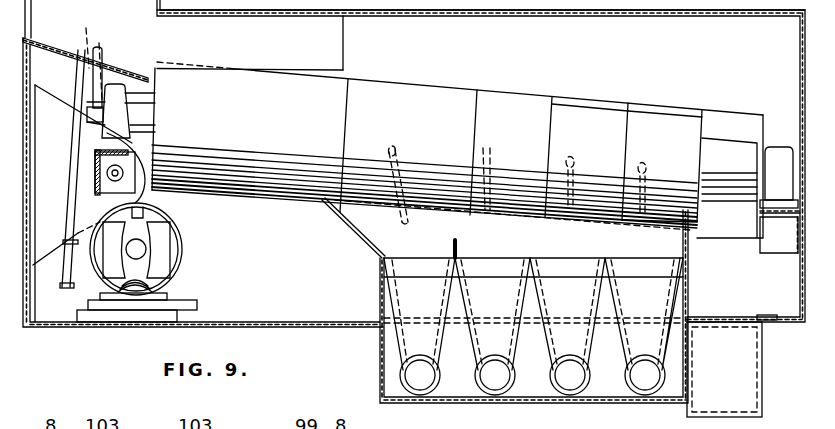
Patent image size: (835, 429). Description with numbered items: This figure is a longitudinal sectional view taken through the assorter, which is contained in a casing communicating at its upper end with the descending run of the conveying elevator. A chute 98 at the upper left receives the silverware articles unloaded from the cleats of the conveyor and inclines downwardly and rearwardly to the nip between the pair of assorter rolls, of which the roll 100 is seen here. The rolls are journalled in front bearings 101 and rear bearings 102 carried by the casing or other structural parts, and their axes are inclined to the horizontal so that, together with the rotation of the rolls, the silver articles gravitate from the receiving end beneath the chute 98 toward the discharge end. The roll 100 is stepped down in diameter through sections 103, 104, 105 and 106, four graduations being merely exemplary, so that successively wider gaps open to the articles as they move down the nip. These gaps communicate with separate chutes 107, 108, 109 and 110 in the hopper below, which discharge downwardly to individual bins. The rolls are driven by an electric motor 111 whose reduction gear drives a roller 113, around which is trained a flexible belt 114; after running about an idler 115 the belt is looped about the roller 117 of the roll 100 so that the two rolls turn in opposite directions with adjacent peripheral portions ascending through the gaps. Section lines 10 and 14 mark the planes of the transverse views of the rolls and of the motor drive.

The section line 10- 10 is at (418, 247).
The section line 14- 14 is at (70, 68).
The chute 98 is at (119, 63).
The assorter roll 100 is at (275, 122).
The front bearing 101 is at (117, 95).
The rear bearing 102 is at (778, 162).
The roll section 103 is at (421, 135).
The roll section 104 is at (524, 135).
The roll section 105 is at (602, 151).
The roll section 106 is at (673, 153).
The chute 107 is at (413, 333).
The chute 108 is at (488, 340).
The chute 109 is at (558, 342).
The chute 110 is at (635, 342).
The electric motor 111 is at (176, 262).
The roller 113 is at (67, 262).
The flexible belt 114 is at (73, 168).
The idler 115 is at (97, 55).
The roller 117 is at (72, 132).